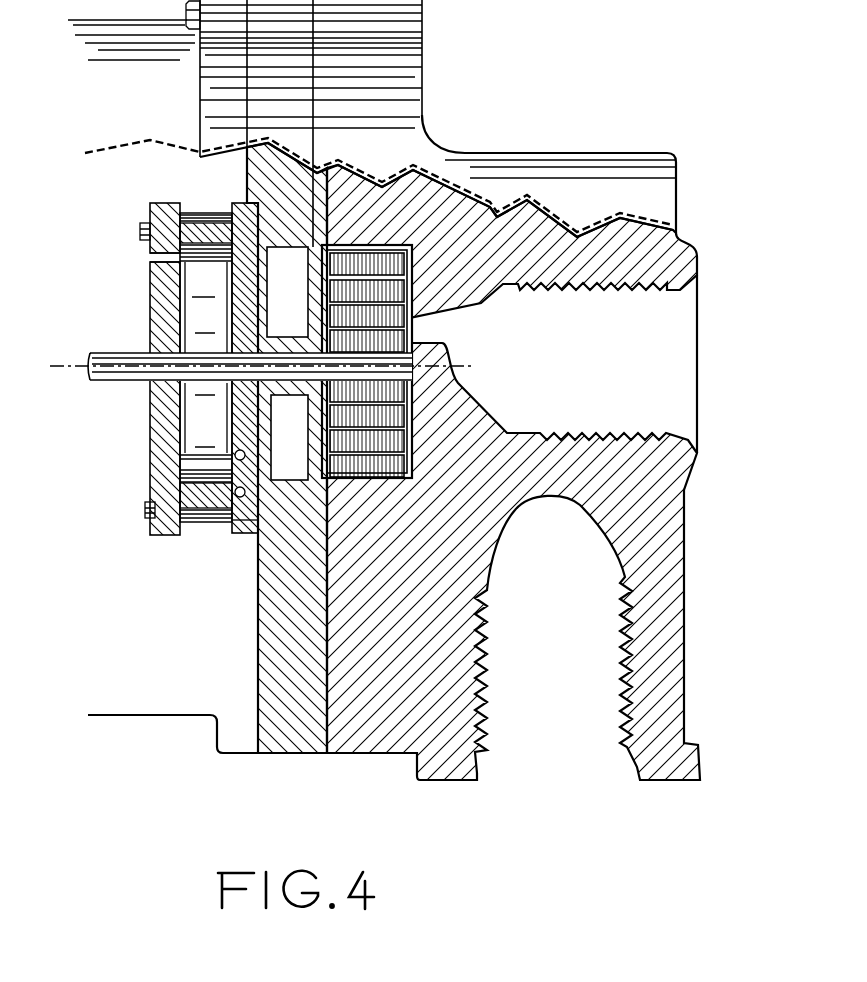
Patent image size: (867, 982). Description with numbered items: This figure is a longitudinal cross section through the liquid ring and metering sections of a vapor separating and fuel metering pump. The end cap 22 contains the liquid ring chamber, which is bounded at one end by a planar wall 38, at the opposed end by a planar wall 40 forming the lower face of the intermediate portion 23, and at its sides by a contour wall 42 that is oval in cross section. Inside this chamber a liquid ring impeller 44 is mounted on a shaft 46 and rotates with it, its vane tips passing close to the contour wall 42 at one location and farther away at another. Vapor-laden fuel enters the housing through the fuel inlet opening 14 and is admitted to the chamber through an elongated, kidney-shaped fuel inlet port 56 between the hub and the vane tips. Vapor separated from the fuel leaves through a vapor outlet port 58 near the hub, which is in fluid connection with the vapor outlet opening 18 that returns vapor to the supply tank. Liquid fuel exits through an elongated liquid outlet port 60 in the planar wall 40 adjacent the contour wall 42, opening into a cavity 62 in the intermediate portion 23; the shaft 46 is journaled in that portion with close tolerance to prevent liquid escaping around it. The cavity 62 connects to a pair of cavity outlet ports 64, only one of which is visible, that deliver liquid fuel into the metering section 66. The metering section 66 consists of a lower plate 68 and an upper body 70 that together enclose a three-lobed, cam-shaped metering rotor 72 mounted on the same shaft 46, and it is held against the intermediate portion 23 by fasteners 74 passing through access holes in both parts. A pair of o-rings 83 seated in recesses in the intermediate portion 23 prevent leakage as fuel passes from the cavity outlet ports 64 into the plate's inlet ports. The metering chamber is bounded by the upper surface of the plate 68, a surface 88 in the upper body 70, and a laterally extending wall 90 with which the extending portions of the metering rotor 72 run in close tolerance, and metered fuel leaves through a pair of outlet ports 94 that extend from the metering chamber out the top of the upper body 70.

The fuel inlet opening 14 is at (543, 780).
The vapor outlet opening 18 is at (698, 343).
The end cap 22 is at (450, 145).
The intermediate portion 23 is at (293, 753).
The planar wall 38 is at (410, 295).
The planar wall 40 is at (410, 175).
The contour wall 42 is at (345, 248).
The liquid ring impeller 44 is at (563, 222).
The shaft 46 is at (288, 337).
The fuel inlet port 56 is at (490, 477).
The vapor outlet port 58 is at (447, 323).
The liquid outlet port 60 is at (293, 463).
The cavity 62 is at (243, 533).
The cavity outlet ports 64 is at (225, 533).
The metering section 66 is at (203, 194).
The lower plate 68 is at (245, 201).
The upper body 70 is at (173, 202).
The metering rotor 72 is at (203, 427).
The fasteners 74 is at (140, 235).
The o-rings 83 is at (228, 527).
The surface 88 is at (200, 420).
The laterally extending wall 90 is at (193, 490).
The outlet ports 94 is at (162, 268).